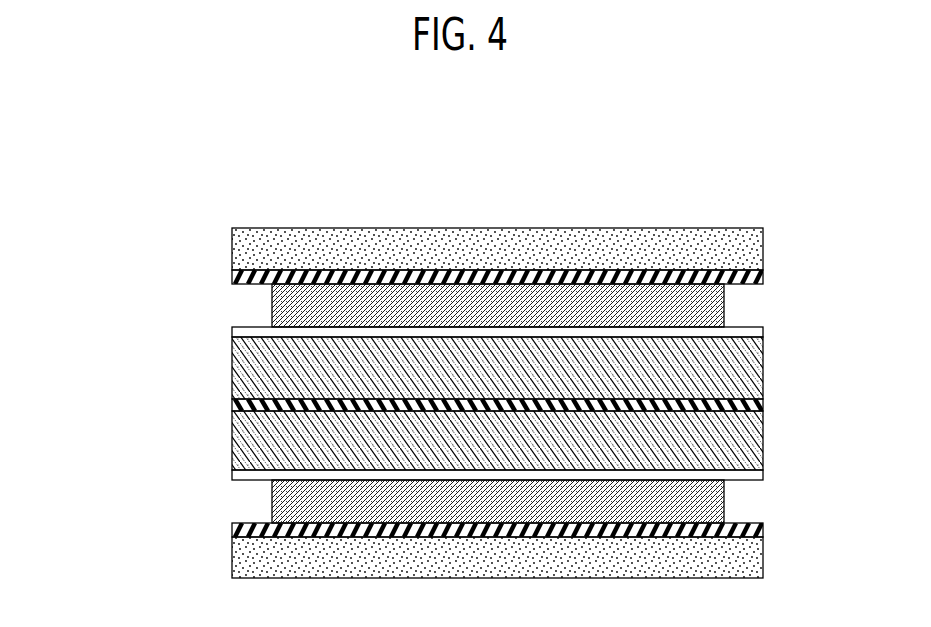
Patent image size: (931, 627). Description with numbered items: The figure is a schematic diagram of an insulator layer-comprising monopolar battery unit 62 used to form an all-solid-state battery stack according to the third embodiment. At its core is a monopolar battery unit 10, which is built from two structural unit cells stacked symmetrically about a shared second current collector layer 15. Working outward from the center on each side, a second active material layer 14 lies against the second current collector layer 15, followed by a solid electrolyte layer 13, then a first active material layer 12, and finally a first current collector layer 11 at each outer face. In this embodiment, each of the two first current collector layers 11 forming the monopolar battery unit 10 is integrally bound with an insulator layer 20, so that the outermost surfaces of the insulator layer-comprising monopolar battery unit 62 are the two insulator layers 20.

The insulator layer-comprising monopolar battery unit 62 is at (475, 209).
The monopolar battery unit 10 is at (93, 267).
The first current collector layer 11 is at (233, 278).
The first active material layer 12 is at (700, 309).
The solid electrolyte layer 13 is at (250, 332).
The second active material layer 14 is at (723, 375).
The second current collector layer 15 is at (233, 404).
The insulator layer 20 is at (257, 243).